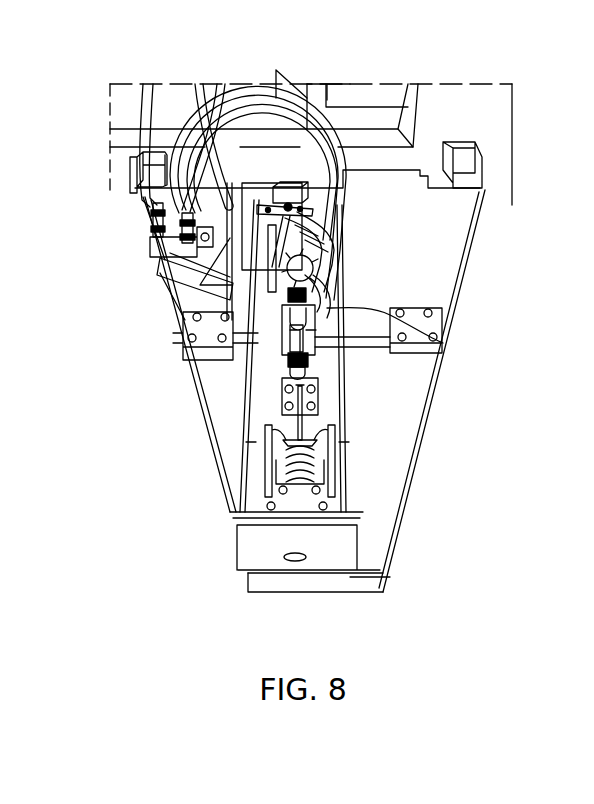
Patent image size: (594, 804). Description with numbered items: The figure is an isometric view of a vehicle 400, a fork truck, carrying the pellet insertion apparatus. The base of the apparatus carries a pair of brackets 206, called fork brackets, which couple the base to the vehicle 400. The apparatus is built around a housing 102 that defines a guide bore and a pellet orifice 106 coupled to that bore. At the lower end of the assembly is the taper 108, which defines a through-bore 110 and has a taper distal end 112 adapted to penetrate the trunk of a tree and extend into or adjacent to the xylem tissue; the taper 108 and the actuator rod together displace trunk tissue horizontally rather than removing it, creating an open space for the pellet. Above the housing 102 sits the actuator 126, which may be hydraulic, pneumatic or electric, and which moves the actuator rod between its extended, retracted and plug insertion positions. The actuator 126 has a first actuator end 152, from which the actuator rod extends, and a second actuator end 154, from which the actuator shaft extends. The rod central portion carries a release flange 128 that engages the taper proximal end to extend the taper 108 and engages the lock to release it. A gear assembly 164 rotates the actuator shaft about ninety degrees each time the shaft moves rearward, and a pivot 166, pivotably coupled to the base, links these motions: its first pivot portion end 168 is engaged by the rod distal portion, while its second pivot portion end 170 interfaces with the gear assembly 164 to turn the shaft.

The vehicle 400 is at (512, 52).
The pivot 166 is at (255, 98).
The brackets 206 is at (130, 165).
The second pivot portion end 170 is at (153, 203).
The gear assembly 164 is at (177, 258).
The first pivot portion end 168 is at (318, 214).
The second actuator end 154 is at (443, 344).
The actuator 126 is at (310, 362).
The release flange 128 is at (285, 417).
The first actuator end 152 is at (313, 396).
The pellet orifice 106 is at (280, 497).
The housing 102 is at (313, 502).
The taper distal end 112 is at (285, 557).
The taper 108 is at (305, 558).
The through-bore 110 is at (297, 562).